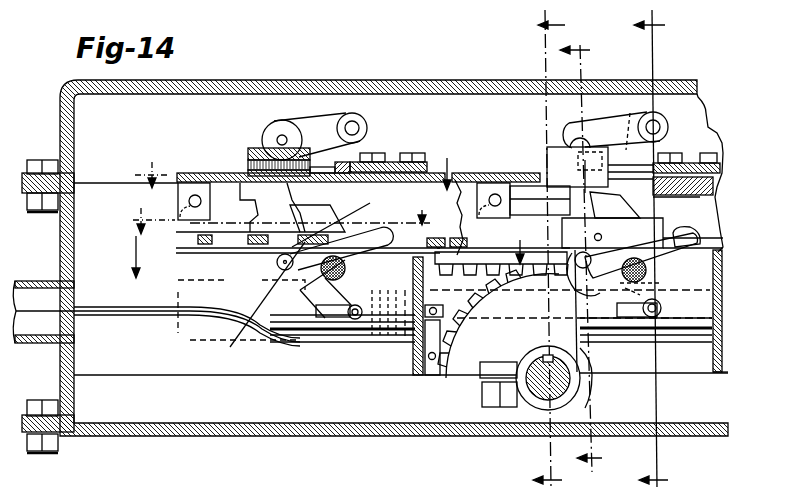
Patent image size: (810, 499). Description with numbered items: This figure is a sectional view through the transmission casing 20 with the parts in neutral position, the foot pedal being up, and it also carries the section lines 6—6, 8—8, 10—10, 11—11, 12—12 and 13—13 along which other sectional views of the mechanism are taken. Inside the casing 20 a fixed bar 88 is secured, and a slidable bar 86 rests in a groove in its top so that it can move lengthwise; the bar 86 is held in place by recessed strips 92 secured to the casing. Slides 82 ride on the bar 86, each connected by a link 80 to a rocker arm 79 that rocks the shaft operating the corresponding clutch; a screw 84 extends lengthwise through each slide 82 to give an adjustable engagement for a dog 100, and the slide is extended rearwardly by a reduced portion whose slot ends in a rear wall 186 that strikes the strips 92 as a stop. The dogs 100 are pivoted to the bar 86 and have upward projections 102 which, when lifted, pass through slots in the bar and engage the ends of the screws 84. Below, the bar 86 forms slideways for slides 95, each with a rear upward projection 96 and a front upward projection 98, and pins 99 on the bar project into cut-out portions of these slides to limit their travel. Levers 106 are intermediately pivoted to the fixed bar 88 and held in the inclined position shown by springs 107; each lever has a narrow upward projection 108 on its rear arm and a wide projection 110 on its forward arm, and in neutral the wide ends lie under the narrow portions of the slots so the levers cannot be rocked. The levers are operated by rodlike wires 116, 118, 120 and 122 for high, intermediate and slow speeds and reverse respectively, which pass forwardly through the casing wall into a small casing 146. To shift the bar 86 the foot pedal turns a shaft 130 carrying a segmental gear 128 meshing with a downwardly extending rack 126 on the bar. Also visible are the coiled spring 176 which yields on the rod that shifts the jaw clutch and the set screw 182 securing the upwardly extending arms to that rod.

The section line 6— 6 is at (554, 250).
The section line 8— 8 is at (657, 250).
The section line 10— 10 is at (591, 257).
The section line 11— 11 is at (296, 165).
The section line 12— 12 is at (282, 213).
The section line 13— 13 is at (328, 260).
The casing 20 is at (478, 80).
The rocker arm 79 is at (370, 163).
The link 80 is at (310, 124).
The slide 82 is at (248, 154).
The screw 84 is at (248, 168).
The slidable bar 86 is at (457, 190).
The fixed bar 88 is at (190, 372).
The recessed strips 92 is at (393, 156).
The slide 95 is at (335, 238).
The upward projection 96 is at (308, 212).
The upward projection 98 is at (262, 246).
The pin 99 is at (280, 263).
The dog 100 is at (210, 247).
The upward projection 102 is at (287, 188).
The lever 106 is at (382, 250).
The spring 107 is at (328, 292).
The narrow upward projection 108 is at (690, 228).
The wide projection 110 is at (255, 302).
The wire 116 is at (252, 305).
The wire 118 is at (307, 327).
The wire 120 is at (335, 333).
The wire 122 is at (352, 343).
The rack 126 is at (468, 272).
The segmental gear 128 is at (449, 378).
The shaft 130 is at (540, 395).
The small casing 146 is at (50, 345).
The coiled spring 176 is at (405, 347).
The set screw 182 is at (593, 128).
The rear wall 186 is at (346, 162).